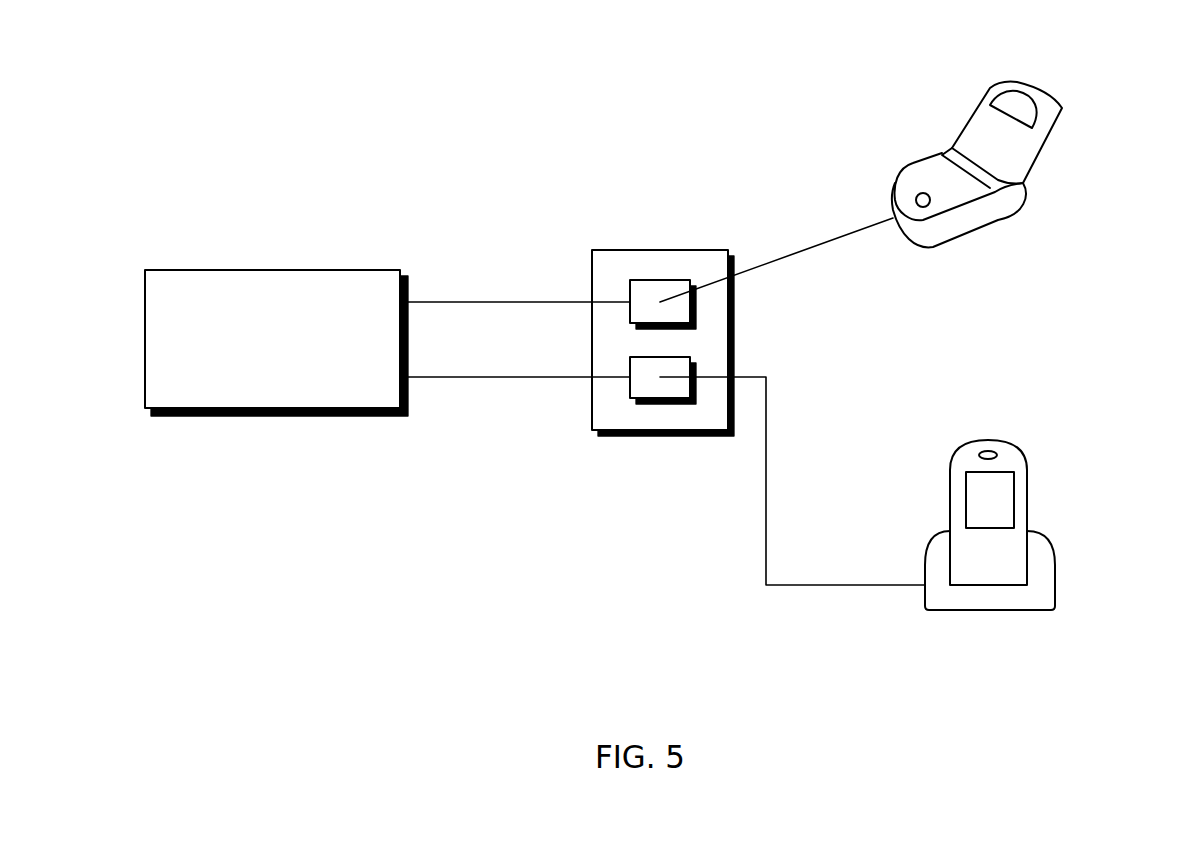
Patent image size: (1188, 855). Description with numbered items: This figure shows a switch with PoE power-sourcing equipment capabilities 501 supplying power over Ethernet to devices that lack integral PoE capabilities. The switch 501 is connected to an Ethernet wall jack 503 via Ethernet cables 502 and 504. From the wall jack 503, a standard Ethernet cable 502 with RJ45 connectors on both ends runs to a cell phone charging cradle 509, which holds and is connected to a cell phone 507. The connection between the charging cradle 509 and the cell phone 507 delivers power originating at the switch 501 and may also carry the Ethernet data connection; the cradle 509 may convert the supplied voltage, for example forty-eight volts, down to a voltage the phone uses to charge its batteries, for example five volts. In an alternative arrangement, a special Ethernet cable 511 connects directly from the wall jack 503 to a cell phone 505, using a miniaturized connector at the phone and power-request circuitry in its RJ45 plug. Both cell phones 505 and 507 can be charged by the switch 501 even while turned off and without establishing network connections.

The switch with PoE PSE capabilities 501 is at (245, 270).
The Ethernet cable 502 is at (462, 301).
The Ethernet wall jack 503 is at (653, 250).
The Ethernet cable 504 is at (462, 378).
The cell phone 505 is at (1052, 93).
The cell phone 507 is at (999, 440).
The cell phone charging cradle 509 is at (1056, 572).
The special Ethernet cable 511 is at (870, 223).